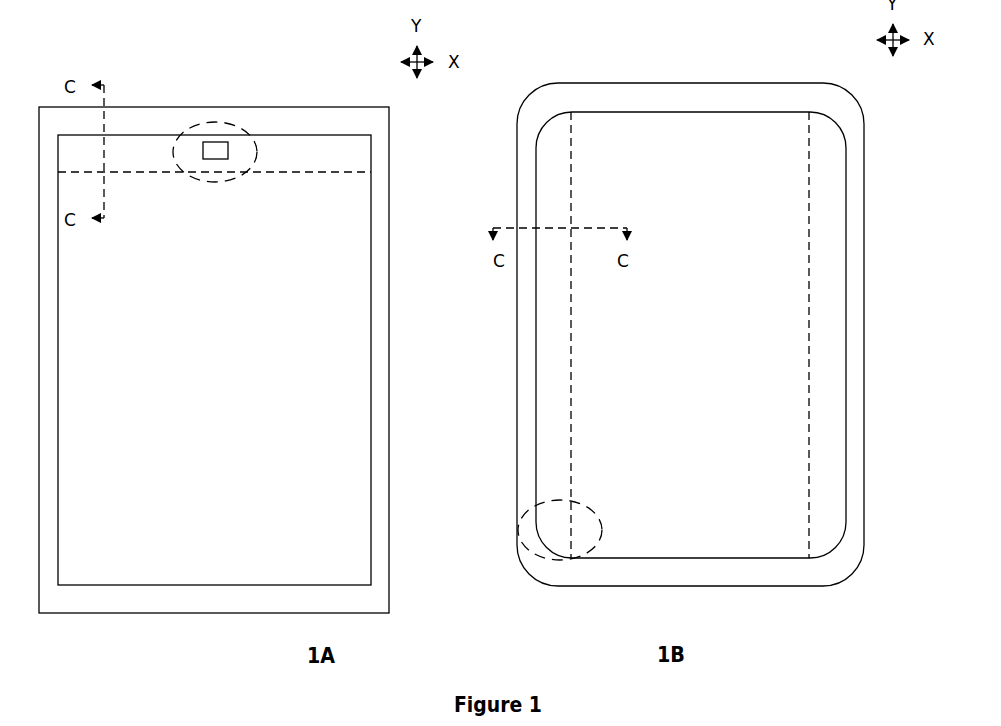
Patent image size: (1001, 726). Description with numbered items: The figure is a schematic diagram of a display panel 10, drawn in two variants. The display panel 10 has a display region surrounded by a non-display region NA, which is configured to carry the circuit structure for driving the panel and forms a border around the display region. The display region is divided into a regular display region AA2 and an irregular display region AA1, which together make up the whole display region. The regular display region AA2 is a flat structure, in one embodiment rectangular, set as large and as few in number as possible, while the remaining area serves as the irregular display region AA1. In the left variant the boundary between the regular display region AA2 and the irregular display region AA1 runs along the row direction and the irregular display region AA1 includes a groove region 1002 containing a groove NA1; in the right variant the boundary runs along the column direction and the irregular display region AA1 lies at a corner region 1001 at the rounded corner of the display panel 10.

The display panel 10 is at (127, 70).
The non-display region NA is at (290, 122).
The groove NA1 is at (215, 147).
The irregular display region AA1 is at (342, 160).
The regular display region AA2 is at (338, 287).
The corner region 1001 is at (597, 515).
The groove region 1002 is at (186, 130).